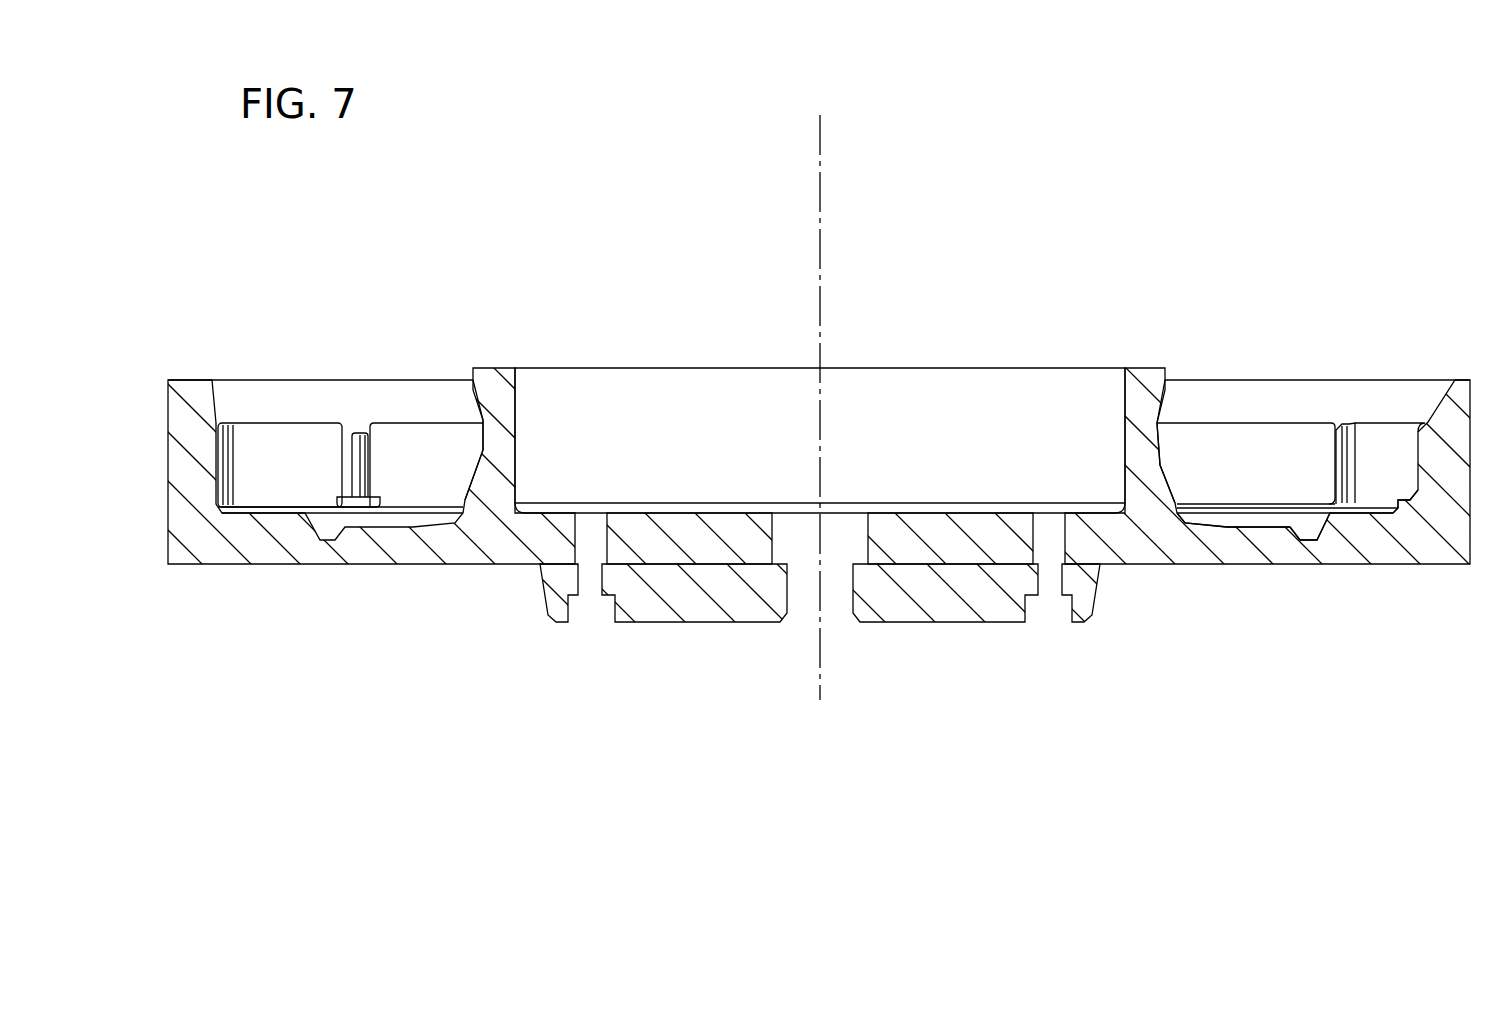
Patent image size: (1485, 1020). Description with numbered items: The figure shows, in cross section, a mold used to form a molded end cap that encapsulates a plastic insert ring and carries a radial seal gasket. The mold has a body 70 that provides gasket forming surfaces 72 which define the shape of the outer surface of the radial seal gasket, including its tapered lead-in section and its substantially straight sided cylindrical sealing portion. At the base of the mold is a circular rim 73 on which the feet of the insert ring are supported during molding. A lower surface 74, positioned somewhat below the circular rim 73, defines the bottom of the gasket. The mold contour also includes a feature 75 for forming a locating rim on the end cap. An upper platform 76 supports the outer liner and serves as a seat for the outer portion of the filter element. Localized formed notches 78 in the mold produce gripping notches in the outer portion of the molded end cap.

The body 70 is at (1136, 550).
The gasket forming surfaces 72 is at (1160, 413).
The circular rim 73 is at (1218, 520).
The lower surface 74 is at (1263, 528).
The feature for forming a locating rim 75 is at (1316, 541).
The upper platform 76 is at (1403, 497).
The localized formed notches 78 is at (1338, 423).